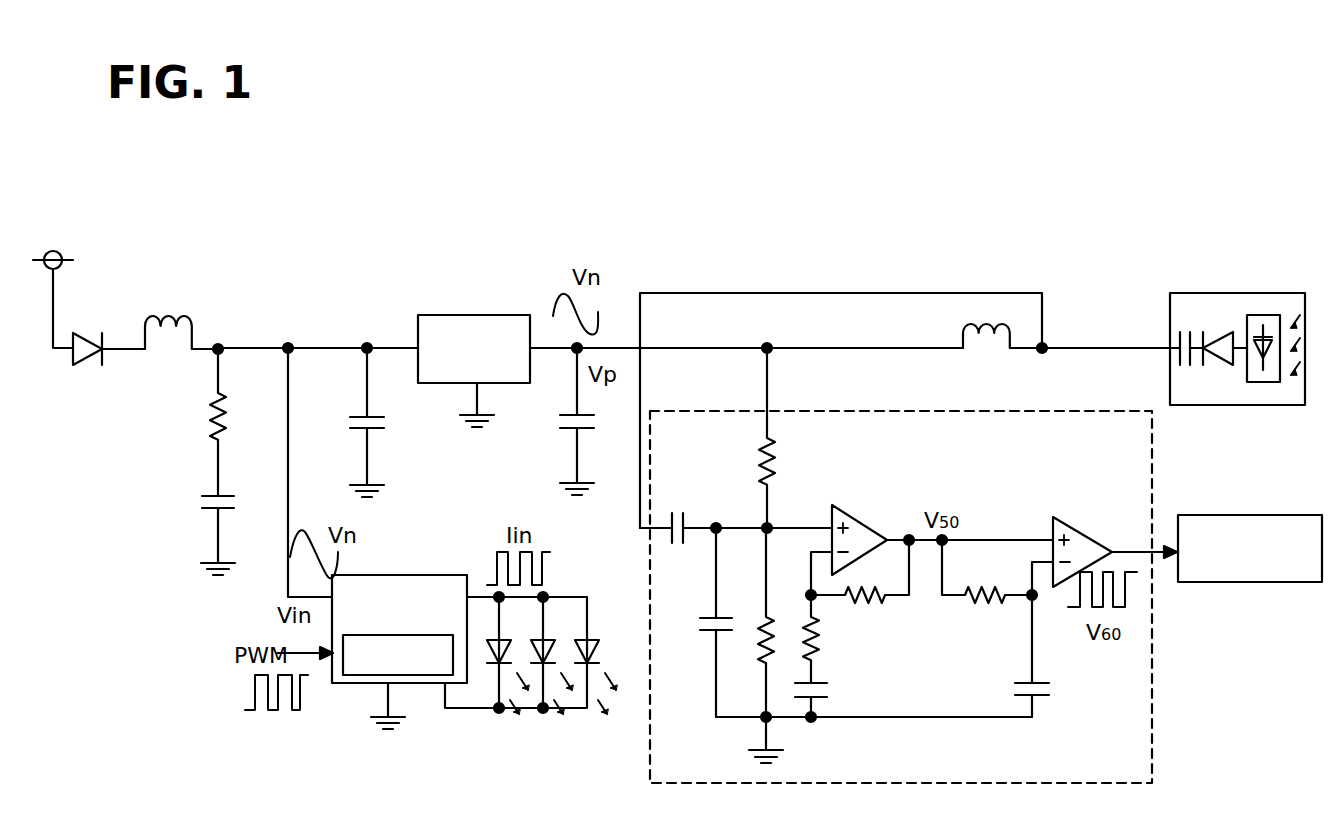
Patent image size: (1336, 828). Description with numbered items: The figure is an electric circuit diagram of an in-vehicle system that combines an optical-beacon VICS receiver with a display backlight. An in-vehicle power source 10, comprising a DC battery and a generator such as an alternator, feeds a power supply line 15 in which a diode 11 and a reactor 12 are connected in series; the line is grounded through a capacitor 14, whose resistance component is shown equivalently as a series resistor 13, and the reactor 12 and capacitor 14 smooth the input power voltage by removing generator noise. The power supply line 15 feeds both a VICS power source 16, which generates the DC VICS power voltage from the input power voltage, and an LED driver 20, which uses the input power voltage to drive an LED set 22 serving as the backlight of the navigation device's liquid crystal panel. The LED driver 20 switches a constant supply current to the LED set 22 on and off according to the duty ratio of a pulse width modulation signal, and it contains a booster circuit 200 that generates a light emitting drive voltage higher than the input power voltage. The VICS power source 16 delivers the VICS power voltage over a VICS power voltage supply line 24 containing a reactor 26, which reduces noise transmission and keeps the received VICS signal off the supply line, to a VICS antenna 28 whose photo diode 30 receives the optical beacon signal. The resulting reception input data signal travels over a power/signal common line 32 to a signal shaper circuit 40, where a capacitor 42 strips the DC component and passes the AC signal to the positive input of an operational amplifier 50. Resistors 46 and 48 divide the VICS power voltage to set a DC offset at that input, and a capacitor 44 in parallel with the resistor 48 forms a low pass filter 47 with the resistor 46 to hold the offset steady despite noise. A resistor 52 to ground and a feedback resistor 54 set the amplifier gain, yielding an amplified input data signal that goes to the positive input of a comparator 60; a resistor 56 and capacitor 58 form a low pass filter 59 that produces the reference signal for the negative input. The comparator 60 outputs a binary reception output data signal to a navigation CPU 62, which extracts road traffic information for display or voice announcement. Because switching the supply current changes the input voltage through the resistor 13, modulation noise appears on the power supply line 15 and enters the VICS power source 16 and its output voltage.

The in-vehicle power source 10 is at (61, 256).
The diode 11 is at (97, 330).
The reactor 12 is at (187, 312).
The series resistor 13 is at (210, 418).
The capacitor 14 is at (206, 497).
The power supply line 15 is at (310, 346).
The VICS power source 16 is at (455, 313).
The LED driver 20 is at (430, 573).
The LED set 22 is at (598, 635).
The VICS power voltage supply line 24 is at (843, 350).
The reactor 26 is at (962, 338).
The VICS antenna 28 is at (1197, 293).
The photo diode 30 is at (1263, 382).
The power/signal common line 32 is at (925, 292).
The signal shaper circuit 40 is at (1153, 725).
The capacitor 42 is at (684, 546).
The capacitor 44 is at (708, 630).
The resistor 46 is at (774, 450).
The low pass filter 47 is at (757, 500).
The resistor 48 is at (770, 617).
The operational amplifier 50 is at (870, 523).
The resistor 52 is at (813, 660).
The resistor 54 is at (883, 603).
The resistor 56 is at (970, 601).
The capacitor 58 is at (1037, 696).
The low pass filter 59 is at (1024, 606).
The comparator 60 is at (1072, 518).
The navigation CPU 62 is at (1222, 513).
The booster circuit 200 is at (423, 675).